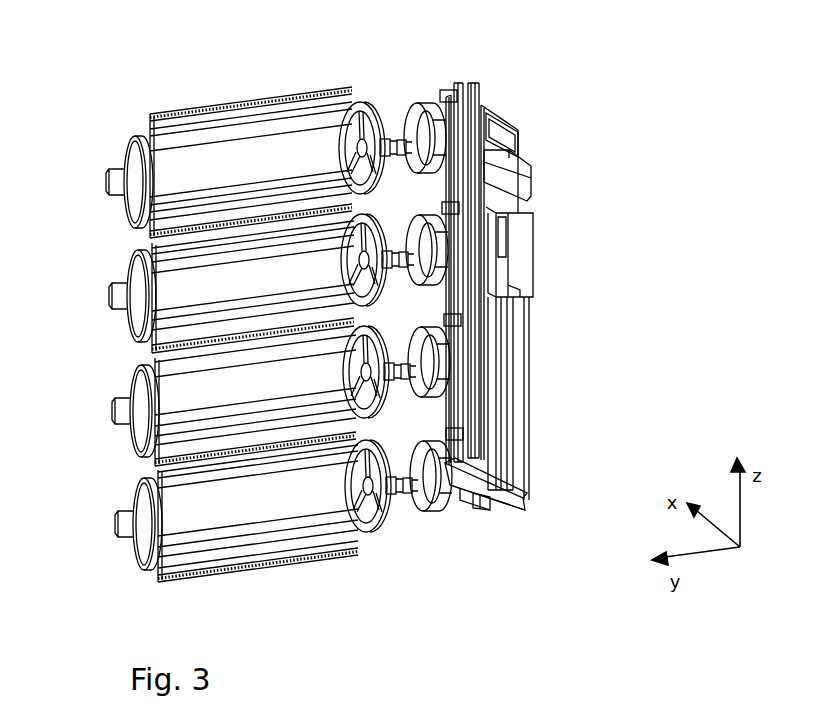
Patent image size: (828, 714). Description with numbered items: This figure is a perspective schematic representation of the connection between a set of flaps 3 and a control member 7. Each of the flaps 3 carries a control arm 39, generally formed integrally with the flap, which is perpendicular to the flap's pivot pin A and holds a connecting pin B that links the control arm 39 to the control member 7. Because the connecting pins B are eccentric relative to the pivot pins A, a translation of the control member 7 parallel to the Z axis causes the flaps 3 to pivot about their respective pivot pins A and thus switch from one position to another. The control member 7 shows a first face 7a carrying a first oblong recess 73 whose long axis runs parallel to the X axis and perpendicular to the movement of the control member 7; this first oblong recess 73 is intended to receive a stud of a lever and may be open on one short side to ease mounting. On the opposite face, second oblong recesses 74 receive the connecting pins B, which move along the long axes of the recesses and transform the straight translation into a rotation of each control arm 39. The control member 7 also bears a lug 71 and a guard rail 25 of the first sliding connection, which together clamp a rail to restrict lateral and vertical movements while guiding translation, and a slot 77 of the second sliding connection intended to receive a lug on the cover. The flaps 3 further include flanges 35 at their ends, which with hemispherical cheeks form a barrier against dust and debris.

The flaps 3 is at (247, 565).
The flanges 35 is at (133, 490).
The control arm 39 is at (417, 110).
The second oblong recess 74 is at (448, 100).
The slot 77 is at (490, 443).
The control member 7 is at (545, 367).
The first face 7a is at (527, 320).
The first oblong recess 73 is at (537, 197).
The lug 71 is at (468, 510).
The guard rail 25 is at (482, 510).
The pivot pin A is at (122, 540).
The connecting pin B is at (447, 100).